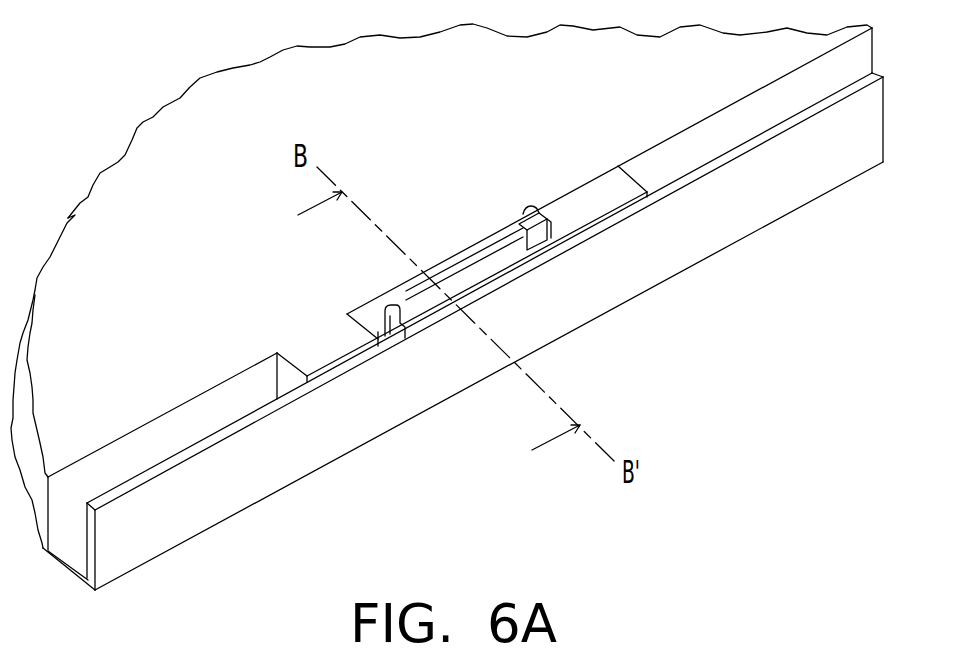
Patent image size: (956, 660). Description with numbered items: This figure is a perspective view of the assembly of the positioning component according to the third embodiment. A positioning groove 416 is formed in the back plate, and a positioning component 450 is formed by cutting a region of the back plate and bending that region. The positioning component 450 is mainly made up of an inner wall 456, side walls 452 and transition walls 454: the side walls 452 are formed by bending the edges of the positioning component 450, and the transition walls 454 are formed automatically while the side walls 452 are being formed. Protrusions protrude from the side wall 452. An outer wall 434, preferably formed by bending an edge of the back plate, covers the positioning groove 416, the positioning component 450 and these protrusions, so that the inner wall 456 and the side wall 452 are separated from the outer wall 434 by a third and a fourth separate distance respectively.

The positioning groove 416 is at (413, 312).
The outer wall 434 is at (618, 287).
The positioning component 450 is at (524, 179).
The side wall 452 is at (548, 222).
The transition wall 454 is at (536, 240).
The inner wall 456 is at (512, 254).